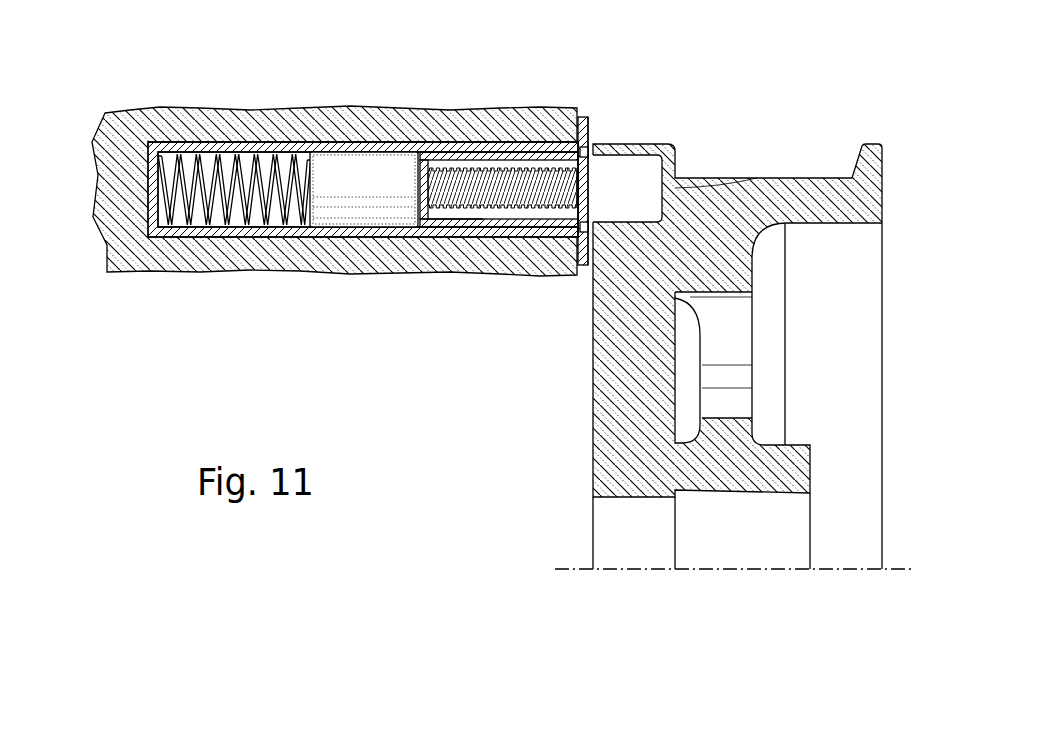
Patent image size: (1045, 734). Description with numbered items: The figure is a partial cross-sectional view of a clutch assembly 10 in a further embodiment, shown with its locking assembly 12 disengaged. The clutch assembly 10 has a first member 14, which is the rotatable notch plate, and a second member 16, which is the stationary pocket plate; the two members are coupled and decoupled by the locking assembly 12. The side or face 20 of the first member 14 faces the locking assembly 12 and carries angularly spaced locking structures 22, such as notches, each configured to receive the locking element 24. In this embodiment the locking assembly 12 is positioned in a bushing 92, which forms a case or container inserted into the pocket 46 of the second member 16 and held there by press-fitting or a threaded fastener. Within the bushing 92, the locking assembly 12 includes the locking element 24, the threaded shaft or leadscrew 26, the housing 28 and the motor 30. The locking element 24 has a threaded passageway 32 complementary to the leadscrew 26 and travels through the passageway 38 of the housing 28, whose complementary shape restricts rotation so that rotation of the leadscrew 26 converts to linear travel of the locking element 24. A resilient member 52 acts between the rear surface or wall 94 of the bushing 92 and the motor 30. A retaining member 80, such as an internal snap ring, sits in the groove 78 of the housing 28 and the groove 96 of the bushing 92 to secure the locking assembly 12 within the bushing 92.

The clutch assembly 10 is at (477, 357).
The locking assembly 12 is at (493, 140).
The first member 14 is at (870, 157).
The second member 16 is at (98, 131).
The side or face 20 is at (592, 384).
The locking structure 22 is at (609, 193).
The locking element 24 is at (513, 213).
The threaded shaft or leadscrew 26 is at (427, 154).
The housing 28 is at (473, 222).
The motor 30 is at (362, 190).
The threaded passageway 32 is at (534, 207).
The passageway 38 is at (443, 213).
The pocket 46 is at (210, 152).
The resilient member 52 is at (207, 208).
The groove 78 is at (593, 148).
The retaining member 80 is at (592, 148).
The bushing 92 is at (166, 146).
The rear surface or wall 94 is at (164, 229).
The groove 96 is at (555, 113).